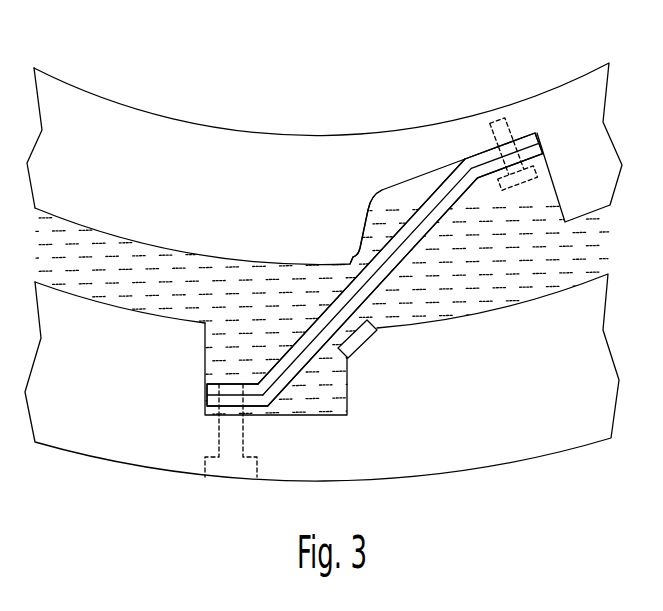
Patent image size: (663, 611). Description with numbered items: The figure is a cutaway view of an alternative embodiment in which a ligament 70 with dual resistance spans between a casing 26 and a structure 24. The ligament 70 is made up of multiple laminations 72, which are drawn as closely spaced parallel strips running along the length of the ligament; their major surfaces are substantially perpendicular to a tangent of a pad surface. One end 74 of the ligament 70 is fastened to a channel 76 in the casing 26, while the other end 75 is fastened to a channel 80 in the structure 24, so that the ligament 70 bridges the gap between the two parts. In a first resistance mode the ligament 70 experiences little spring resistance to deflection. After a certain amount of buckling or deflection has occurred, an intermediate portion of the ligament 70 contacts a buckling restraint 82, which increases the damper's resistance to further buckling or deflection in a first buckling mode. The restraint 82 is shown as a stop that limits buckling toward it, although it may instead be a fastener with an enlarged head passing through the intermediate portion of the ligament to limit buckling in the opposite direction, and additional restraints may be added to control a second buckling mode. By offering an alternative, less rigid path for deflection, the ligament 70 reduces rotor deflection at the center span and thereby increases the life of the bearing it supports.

The structure 24 is at (243, 130).
The casing 26 is at (120, 447).
The ligament 70 is at (357, 305).
The laminations 72 is at (440, 188).
The one end 74 is at (212, 383).
The other end 75 is at (538, 164).
The channel 76 is at (337, 410).
The channel 80 is at (380, 197).
The buckling restraint 82 is at (360, 340).